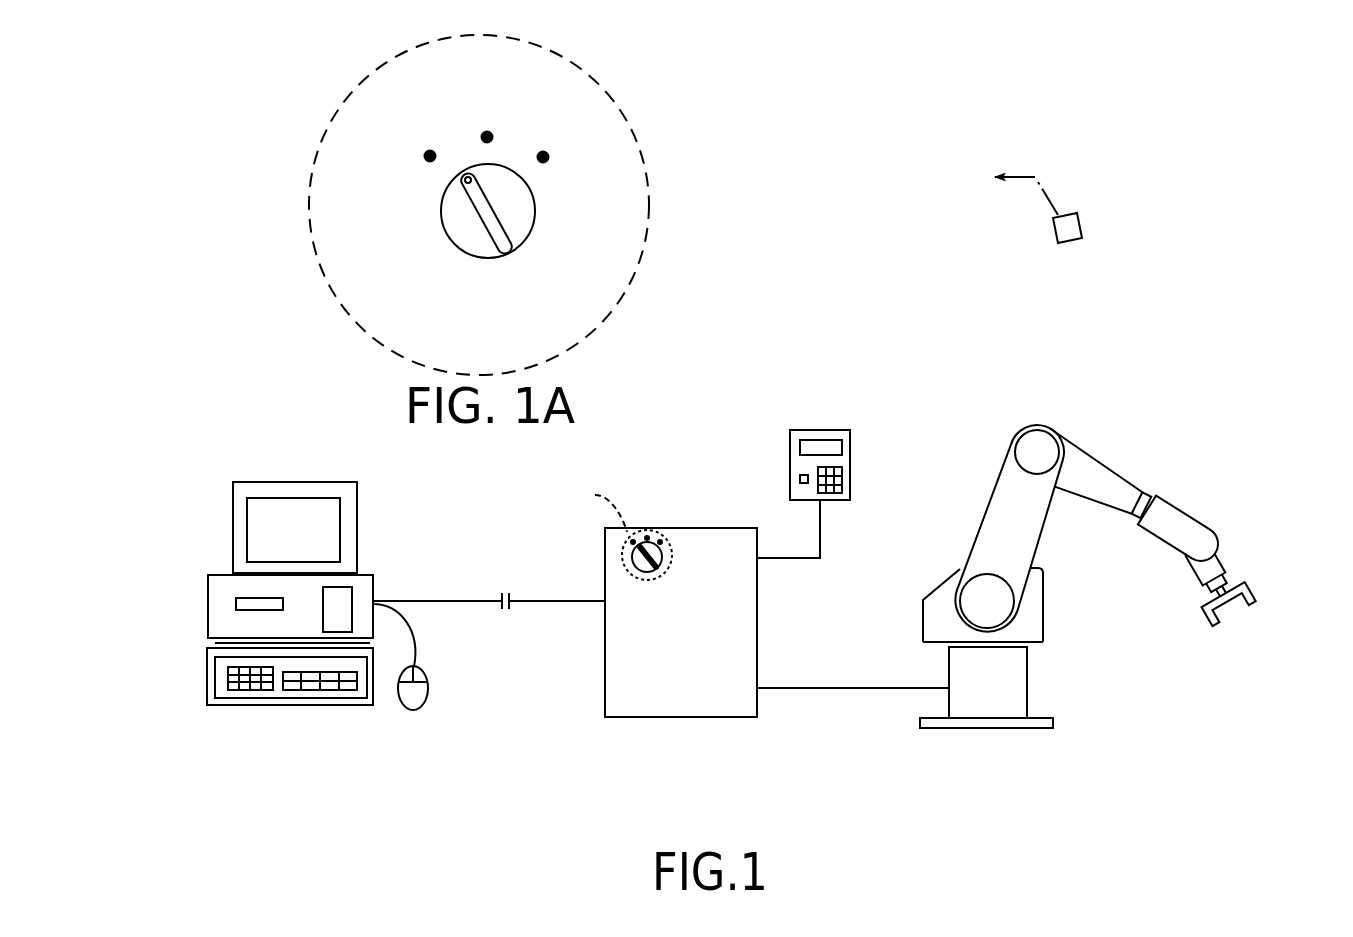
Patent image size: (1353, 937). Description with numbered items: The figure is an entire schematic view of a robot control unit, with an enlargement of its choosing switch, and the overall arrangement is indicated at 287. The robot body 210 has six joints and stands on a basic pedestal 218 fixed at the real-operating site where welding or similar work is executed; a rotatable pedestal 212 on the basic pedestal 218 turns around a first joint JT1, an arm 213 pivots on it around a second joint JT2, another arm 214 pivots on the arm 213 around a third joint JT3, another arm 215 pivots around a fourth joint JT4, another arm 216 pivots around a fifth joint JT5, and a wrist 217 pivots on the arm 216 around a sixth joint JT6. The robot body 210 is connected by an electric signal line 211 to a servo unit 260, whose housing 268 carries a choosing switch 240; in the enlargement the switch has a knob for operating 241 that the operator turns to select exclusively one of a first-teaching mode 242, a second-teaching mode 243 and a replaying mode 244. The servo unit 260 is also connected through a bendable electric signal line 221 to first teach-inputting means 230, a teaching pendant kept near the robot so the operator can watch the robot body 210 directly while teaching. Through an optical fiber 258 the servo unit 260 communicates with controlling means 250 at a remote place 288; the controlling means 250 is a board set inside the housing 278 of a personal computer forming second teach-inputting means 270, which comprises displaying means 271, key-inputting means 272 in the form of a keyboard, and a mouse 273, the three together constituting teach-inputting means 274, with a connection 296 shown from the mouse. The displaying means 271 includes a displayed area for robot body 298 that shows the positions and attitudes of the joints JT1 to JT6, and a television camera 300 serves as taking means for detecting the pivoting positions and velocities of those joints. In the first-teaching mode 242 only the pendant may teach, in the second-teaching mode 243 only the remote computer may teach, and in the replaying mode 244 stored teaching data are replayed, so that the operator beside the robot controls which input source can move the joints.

In FIG. 1, the robot body 210 is at (1075, 576).
In FIG. 1, the electric signal line 211 is at (837, 689).
In FIG. 1, the rotatable pedestal 212 is at (1037, 628).
In FIG. 1, the arm 213 is at (1005, 488).
In FIG. 1, the arm 214 is at (1083, 465).
In FIG. 1, the arm 215 is at (1167, 535).
In FIG. 1, the arm 216 is at (1198, 568).
In FIG. 1, the wrist 217 is at (1220, 630).
In FIG. 1, the basic pedestal 218 is at (983, 713).
In FIG. 1, the bendable electric signal line 221 is at (812, 560).
In FIG. 1, the first teach-inputting means 230 is at (820, 432).
In FIG. 1A, the choosing switch 240 is at (512, 201).
In FIG. 1, the choosing switch 240 is at (653, 543).
In FIG. 1A, the knob for operating 241 is at (463, 232).
In FIG. 1A, the first-teaching mode 242 is at (430, 151).
In FIG. 1A, the second-teaching mode 243 is at (492, 137).
In FIG. 1A, the replaying mode 244 is at (549, 157).
In FIG. 1, the controlling means 250 is at (340, 600).
In FIG. 1, the optical fiber 258 is at (549, 600).
In FIG. 1, the servo unit 260 is at (642, 617).
In FIG. 1, the housing 268 is at (606, 703).
In FIG. 1, the second teach-inputting means 270 is at (295, 568).
In FIG. 1, the displaying means 271 is at (310, 490).
In FIG. 1, the key-inputting means 272 is at (222, 682).
In FIG. 1, the mouse 273 is at (407, 708).
In FIG. 1, the teach-inputting means 274 is at (364, 711).
In FIG. 1, the housing 278 is at (215, 610).
In FIG. 1, the robot control system 287 is at (642, 564).
In FIG. 1, the remote place 288 is at (329, 601).
In FIG. 1, the mouse cable 296 is at (427, 683).
In FIG. 1, the displayed area for robot body 298 is at (995, 188).
In FIG. 1, the television camera 300 is at (1078, 230).
In FIG. 1, the first joint JT1 is at (906, 648).
In FIG. 1, the second joint JT2 is at (963, 543).
In FIG. 1, the third joint JT3 is at (1035, 412).
In FIG. 1, the fourth joint JT4 is at (1143, 479).
In FIG. 1, the fifth joint JT5 is at (1227, 541).
In FIG. 1, the sixth joint JT6 is at (1256, 581).